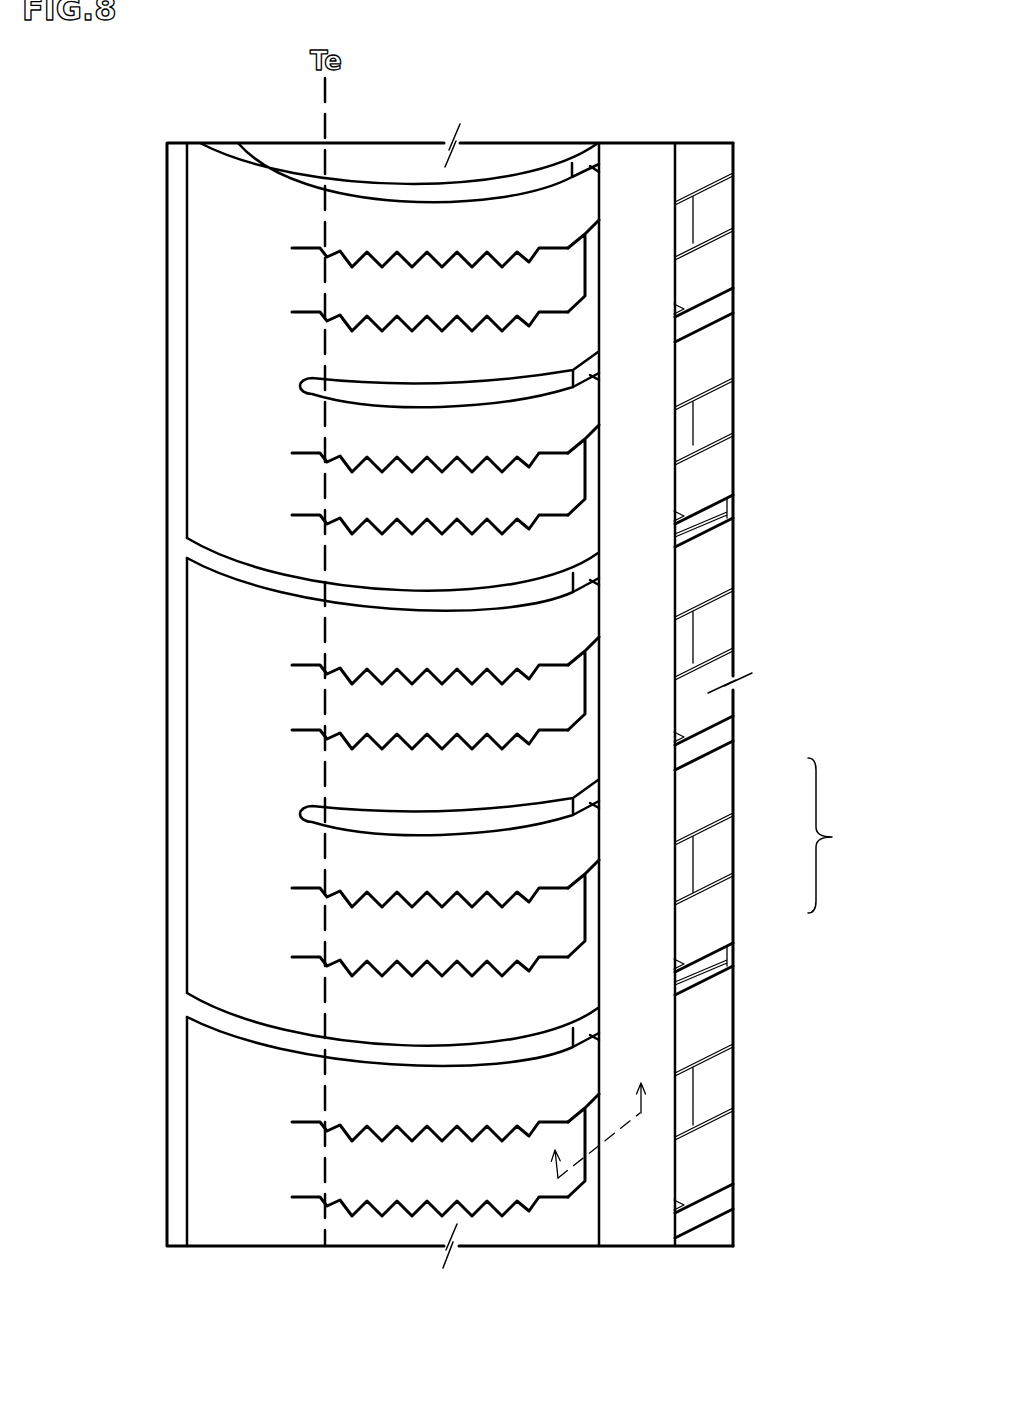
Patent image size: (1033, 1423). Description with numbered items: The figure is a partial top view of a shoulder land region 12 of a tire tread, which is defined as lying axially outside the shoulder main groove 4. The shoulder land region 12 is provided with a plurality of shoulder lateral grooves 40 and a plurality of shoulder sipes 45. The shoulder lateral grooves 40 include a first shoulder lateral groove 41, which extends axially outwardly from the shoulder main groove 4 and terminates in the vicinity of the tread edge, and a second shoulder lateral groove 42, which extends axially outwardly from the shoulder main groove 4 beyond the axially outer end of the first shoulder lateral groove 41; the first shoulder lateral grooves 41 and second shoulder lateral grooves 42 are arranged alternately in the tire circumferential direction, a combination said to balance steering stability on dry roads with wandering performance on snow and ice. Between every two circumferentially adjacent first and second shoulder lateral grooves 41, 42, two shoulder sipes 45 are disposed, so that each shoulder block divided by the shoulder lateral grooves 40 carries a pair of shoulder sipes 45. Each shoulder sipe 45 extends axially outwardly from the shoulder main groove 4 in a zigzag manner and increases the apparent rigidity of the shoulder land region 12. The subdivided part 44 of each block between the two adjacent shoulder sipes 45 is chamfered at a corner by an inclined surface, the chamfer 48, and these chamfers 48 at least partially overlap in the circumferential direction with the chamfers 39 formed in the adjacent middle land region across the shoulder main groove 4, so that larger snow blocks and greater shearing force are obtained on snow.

The shoulder main groove 4 is at (640, 172).
The shoulder land region 12 is at (411, 228).
The chamfer 39 is at (683, 1098).
The shoulder lateral groove 40 is at (840, 835).
The first shoulder lateral groove 41 is at (476, 383).
The second shoulder lateral groove 42 is at (507, 175).
The subdivided part 44 is at (509, 1168).
The shoulder sipe 45 is at (478, 311).
The chamfer 48 is at (597, 247).